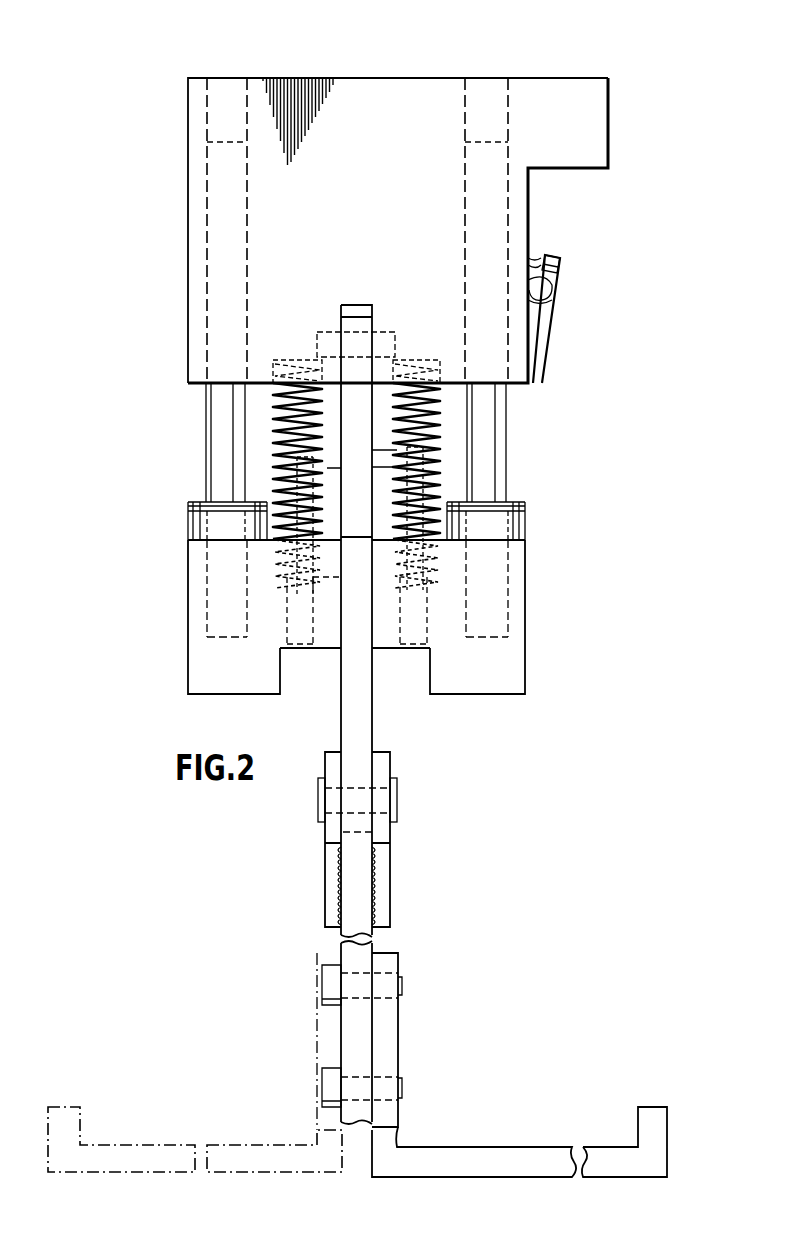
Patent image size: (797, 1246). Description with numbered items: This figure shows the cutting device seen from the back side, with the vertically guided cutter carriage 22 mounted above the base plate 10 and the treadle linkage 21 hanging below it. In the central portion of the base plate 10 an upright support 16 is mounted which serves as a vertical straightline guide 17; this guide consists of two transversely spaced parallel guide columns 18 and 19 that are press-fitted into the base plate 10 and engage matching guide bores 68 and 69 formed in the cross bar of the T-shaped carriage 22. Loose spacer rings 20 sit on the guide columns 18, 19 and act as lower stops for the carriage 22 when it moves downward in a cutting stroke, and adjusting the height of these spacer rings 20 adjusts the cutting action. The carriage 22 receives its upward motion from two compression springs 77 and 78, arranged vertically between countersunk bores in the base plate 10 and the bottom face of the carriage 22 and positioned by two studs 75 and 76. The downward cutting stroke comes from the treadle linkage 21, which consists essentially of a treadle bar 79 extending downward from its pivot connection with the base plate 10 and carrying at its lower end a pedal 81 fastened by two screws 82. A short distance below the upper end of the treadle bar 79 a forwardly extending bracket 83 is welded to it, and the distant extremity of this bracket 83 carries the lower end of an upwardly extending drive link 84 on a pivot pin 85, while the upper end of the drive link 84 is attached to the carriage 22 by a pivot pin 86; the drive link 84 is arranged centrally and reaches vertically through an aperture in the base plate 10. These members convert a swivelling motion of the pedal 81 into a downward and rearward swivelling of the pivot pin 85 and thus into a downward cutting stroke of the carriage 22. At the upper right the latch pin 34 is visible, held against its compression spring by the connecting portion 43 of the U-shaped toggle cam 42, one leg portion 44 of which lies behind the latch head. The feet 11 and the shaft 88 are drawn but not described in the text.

The base plate 10 is at (525, 603).
The feet 11 is at (197, 686).
The upright support 16 is at (530, 498).
The vertical straightline guide 17 is at (512, 450).
The guide column 18 is at (485, 402).
The guide column 19 is at (218, 448).
The spacer rings 20 is at (197, 516).
The treadle linkage 21 is at (392, 695).
The cutter carriage 22 is at (265, 208).
The latch pin 34 is at (531, 260).
The toggle cam 42 is at (542, 362).
The connecting portion 43 is at (548, 267).
The leg portion 44 is at (543, 298).
The guide bore 68 is at (508, 123).
The guide bore 69 is at (247, 105).
The stud 75 is at (275, 533).
The stud 76 is at (428, 527).
The compression spring 77 is at (330, 468).
The compression spring 78 is at (437, 423).
The treadle bar 79 is at (357, 708).
The pedal 81 is at (442, 1155).
The screws 82 is at (327, 1087).
The bracket 83 is at (382, 900).
The drive link 84 is at (350, 412).
The pivot pin 85 is at (395, 798).
The pivot pin 86 is at (378, 340).
The shaft 88 is at (362, 307).